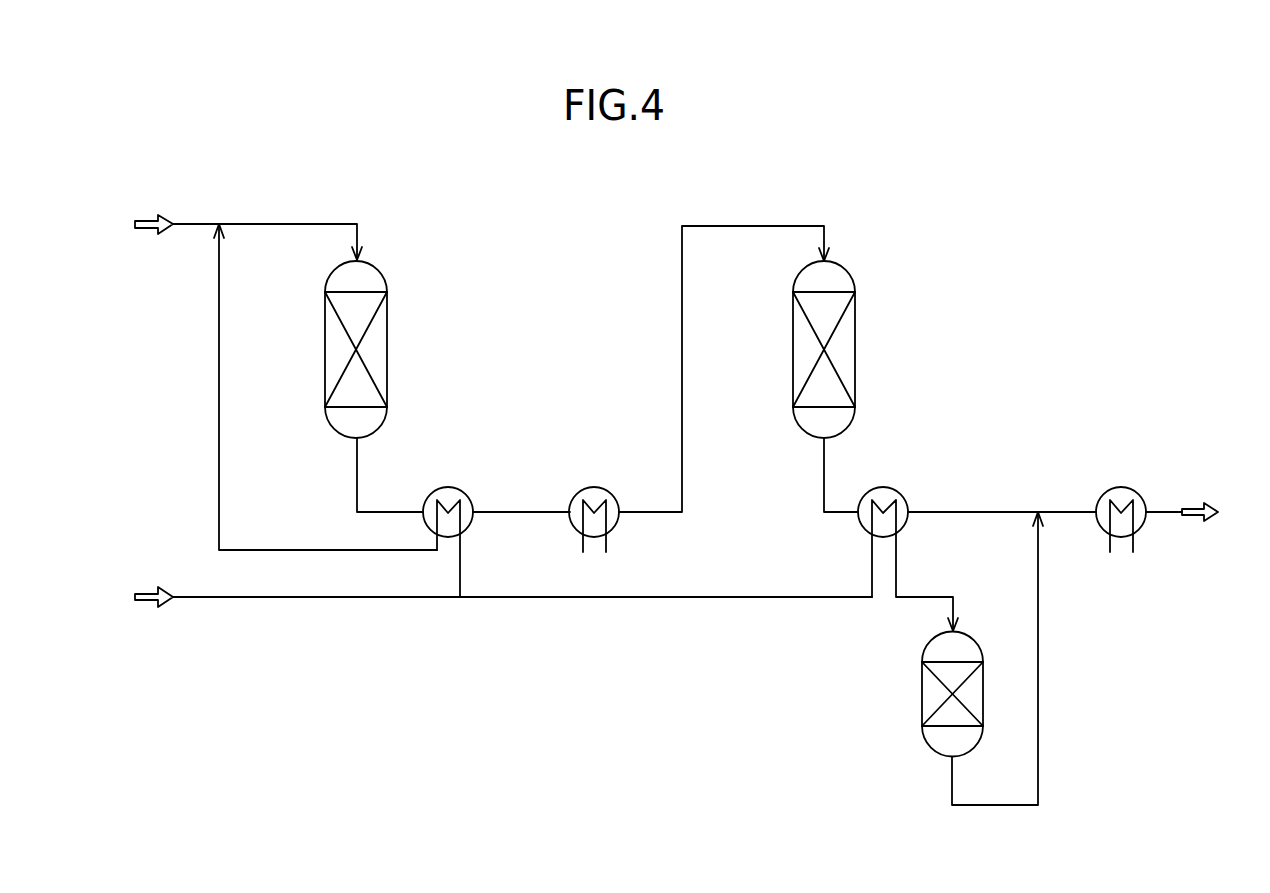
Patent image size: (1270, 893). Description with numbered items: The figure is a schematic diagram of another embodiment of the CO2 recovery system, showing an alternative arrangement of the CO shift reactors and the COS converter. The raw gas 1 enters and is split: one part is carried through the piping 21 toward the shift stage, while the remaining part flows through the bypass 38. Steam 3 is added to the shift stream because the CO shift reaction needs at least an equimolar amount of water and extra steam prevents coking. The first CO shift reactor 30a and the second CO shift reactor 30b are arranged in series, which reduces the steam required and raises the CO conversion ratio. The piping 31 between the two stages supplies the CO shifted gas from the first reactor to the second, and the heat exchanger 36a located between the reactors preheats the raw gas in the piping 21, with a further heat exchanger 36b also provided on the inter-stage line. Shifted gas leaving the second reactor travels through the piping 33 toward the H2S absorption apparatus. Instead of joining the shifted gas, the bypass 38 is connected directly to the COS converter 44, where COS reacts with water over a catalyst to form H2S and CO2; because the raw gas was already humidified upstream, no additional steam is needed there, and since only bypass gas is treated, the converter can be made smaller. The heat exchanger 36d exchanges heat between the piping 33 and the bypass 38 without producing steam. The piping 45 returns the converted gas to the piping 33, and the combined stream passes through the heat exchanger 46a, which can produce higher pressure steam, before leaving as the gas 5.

The raw gas 1 is at (297, 618).
The steam 3 is at (248, 245).
The gas after the COS conversion reaction 5 is at (1182, 532).
The piping 21 is at (219, 435).
The first CO shift reactor 30a is at (387, 365).
The second CO shift reactor 30b is at (855, 355).
The piping 31 is at (682, 275).
The piping 33 is at (1011, 512).
The heat exchanger 36a is at (448, 487).
The heat exchanger 36b is at (594, 487).
The heat exchanger 36d is at (887, 487).
The bypass 38 is at (548, 597).
The COS converter 44 is at (922, 706).
The piping 45 is at (1038, 732).
The heat exchanger 46a is at (1121, 487).